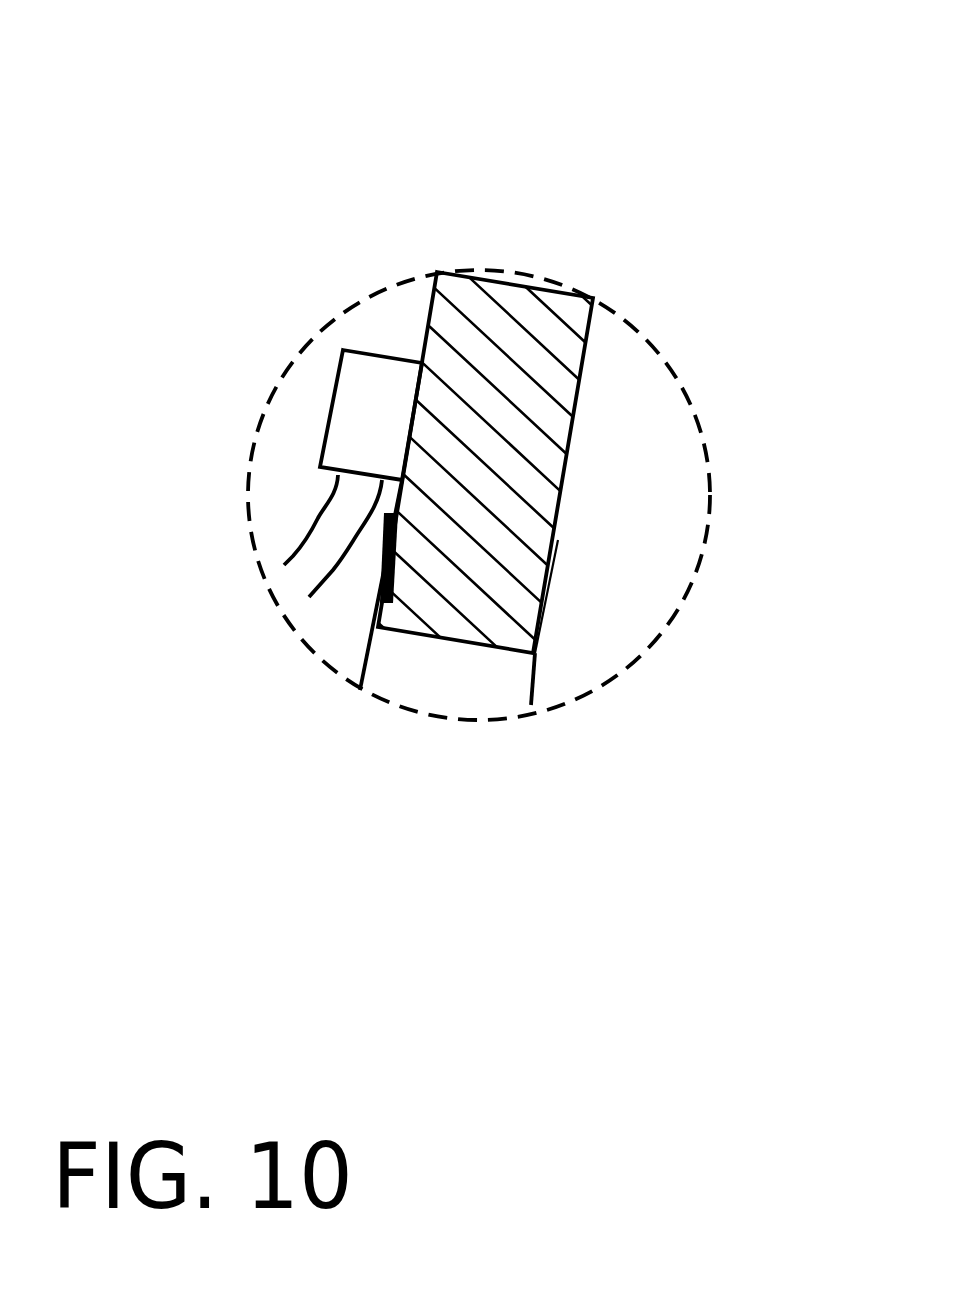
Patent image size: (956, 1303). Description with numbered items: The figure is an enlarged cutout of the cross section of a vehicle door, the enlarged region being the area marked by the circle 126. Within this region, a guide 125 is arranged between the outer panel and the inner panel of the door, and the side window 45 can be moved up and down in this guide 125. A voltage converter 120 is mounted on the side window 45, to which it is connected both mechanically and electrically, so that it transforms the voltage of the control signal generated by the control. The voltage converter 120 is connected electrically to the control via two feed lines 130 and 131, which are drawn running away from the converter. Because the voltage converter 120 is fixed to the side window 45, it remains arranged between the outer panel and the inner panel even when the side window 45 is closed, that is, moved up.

The side window 45 is at (525, 342).
The voltage converter 120 is at (353, 410).
The guide 125 is at (535, 678).
The circle 126 is at (695, 418).
The feed line 130 is at (284, 565).
The feed line 131 is at (309, 597).